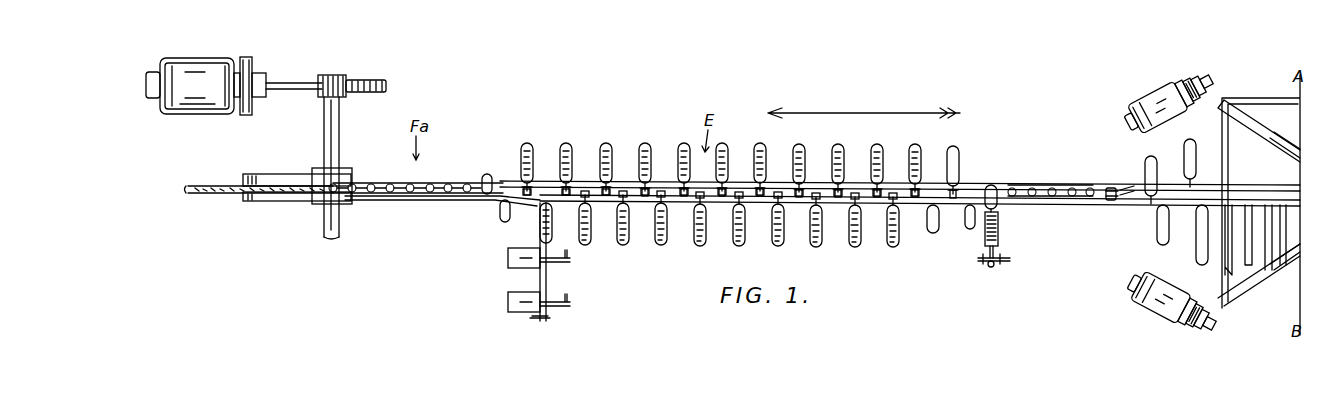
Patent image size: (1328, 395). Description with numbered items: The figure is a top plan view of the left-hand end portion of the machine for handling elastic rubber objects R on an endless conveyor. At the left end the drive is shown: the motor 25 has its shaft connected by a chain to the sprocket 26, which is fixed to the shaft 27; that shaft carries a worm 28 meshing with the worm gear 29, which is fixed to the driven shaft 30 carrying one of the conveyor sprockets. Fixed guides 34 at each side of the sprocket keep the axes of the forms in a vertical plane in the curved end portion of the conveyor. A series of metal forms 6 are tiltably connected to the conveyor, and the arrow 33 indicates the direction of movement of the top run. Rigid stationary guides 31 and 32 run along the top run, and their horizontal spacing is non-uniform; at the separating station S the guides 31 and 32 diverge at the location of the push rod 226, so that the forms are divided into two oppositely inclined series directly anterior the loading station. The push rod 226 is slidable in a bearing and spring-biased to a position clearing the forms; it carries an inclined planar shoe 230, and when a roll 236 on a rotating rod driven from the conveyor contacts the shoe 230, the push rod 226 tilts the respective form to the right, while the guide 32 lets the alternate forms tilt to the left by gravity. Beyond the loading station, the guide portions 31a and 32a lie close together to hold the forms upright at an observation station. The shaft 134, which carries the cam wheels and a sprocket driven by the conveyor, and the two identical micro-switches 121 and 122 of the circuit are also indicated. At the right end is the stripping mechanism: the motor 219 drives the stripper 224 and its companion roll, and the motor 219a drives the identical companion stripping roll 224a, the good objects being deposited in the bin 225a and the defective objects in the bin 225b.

The motor 25 is at (205, 114).
The sprocket 26 is at (250, 70).
The shaft 27 is at (300, 84).
The worm 28 is at (340, 78).
The worm gear 29 is at (384, 88).
The driven shaft 30 is at (340, 115).
The fixed guides 34 is at (278, 176).
The rubber objects R is at (200, 194).
The portion of fixed guide 31a is at (430, 184).
The portion of fixed guide 32a is at (435, 201).
The arrow 33 is at (796, 112).
The fixed guide 31 is at (612, 180).
The fixed guide 32 is at (652, 203).
The shaft 134 is at (538, 216).
The micro-switch 121 is at (508, 258).
The micro-switch 122 is at (508, 302).
The forms 6 is at (959, 170).
The push rod 226 is at (988, 208).
The separating station S is at (1004, 218).
The shoe 230 is at (1010, 259).
The rolls 236 is at (987, 264).
The bin 225b is at (1230, 101).
The stripping roll 224a is at (1262, 130).
The motor 219a is at (1160, 112).
The bin 225a is at (1240, 303).
The stripper 224 is at (1288, 272).
The motor 219 is at (1180, 322).